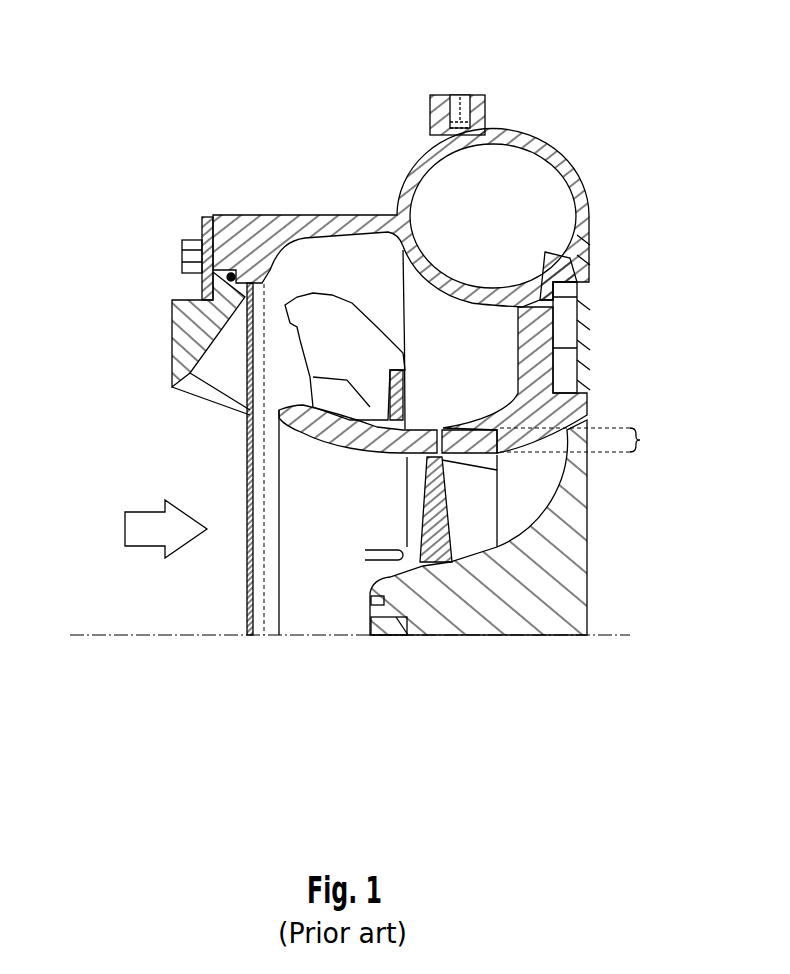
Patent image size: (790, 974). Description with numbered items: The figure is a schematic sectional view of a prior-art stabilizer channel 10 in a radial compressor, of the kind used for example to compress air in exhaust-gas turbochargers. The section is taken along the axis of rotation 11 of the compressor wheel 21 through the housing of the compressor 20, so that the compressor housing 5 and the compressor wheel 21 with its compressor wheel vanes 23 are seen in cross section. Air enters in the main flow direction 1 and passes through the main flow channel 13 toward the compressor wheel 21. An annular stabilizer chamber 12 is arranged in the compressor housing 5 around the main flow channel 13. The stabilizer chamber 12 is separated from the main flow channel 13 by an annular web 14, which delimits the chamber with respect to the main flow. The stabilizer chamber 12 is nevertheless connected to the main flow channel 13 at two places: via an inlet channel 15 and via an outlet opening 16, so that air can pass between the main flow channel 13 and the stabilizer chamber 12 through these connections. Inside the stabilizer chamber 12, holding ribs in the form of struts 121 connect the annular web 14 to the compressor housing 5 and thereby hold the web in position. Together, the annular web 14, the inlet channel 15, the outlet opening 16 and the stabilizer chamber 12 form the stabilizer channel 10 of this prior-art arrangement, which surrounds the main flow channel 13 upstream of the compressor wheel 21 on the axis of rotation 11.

The main flow direction 1 is at (186, 542).
The compressor housing 5 is at (371, 136).
The stabilizer channel 10 is at (318, 274).
The axis of rotation of the compressor wheel 11 is at (303, 637).
The annular stabilizer chamber 12 is at (440, 336).
The strut 121 is at (335, 306).
The main flow channel 13 is at (335, 535).
The annular web 14 is at (390, 428).
The inlet channel of the stabilizer chamber 15 is at (587, 442).
The outlet opening of the stabilizer chamber 16 is at (266, 418).
The compressor 20 is at (614, 49).
The compressor wheel 21 is at (523, 620).
The compressor wheel vanes 23 is at (400, 555).